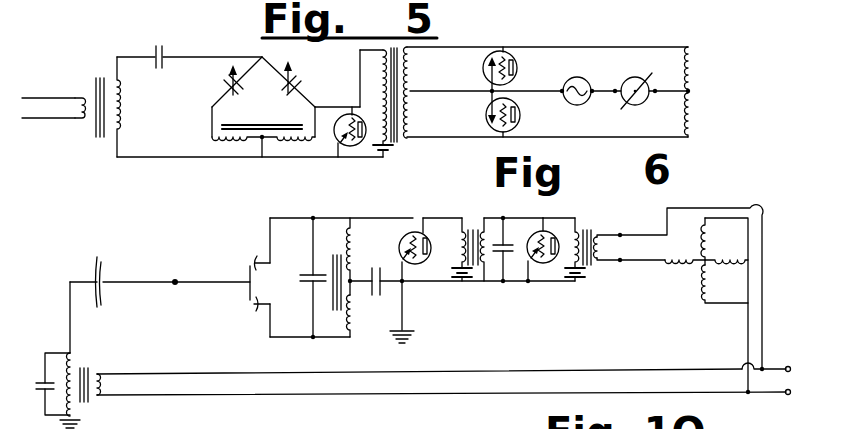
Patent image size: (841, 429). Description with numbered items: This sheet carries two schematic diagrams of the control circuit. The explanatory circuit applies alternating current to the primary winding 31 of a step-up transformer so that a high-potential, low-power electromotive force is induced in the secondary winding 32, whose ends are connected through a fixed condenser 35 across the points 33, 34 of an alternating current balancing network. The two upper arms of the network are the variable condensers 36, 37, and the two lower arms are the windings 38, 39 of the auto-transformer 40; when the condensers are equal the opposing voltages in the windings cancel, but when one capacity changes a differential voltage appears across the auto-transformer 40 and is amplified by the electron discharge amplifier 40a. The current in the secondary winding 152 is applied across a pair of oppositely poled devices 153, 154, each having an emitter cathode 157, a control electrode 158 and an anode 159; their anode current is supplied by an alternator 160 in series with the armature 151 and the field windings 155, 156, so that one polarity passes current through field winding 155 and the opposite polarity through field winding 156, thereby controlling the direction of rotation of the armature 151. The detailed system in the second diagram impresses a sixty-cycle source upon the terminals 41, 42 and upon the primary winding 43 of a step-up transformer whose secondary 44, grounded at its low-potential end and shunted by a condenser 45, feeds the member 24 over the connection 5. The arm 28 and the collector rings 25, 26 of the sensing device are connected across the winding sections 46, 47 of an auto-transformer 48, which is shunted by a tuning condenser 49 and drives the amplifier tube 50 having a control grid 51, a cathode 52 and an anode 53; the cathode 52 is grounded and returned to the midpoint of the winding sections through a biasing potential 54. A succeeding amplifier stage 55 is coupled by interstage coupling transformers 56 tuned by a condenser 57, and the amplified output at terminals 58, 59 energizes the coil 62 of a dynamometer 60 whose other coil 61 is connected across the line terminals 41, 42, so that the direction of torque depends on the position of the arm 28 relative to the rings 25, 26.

In FIG. 6, the conductor 5 is at (106, 287).
In FIG. 6, the member 24 is at (92, 276).
In FIG. 6, the collector ring 25 is at (258, 256).
In FIG. 6, the collector ring 26 is at (256, 306).
In FIG. 6, the arm 28 is at (248, 278).
In FIG. 5, the primary winding 31 is at (80, 111).
In FIG. 5, the secondary winding 32 is at (124, 108).
In FIG. 5, the point 33 is at (262, 57).
In FIG. 5, the point 34 is at (260, 148).
In FIG. 5, the condenser 35 is at (154, 52).
In FIG. 5, the variable condenser 36 is at (222, 88).
In FIG. 5, the variable condenser 37 is at (300, 80).
In FIG. 5, the winding 38 is at (228, 137).
In FIG. 5, the winding 39 is at (294, 138).
In FIG. 5, the auto-transformer 40 is at (249, 125).
In FIG. 5, the electron discharge amplifier 40a is at (352, 114).
In FIG. 6, the terminal 41 is at (798, 352).
In FIG. 6, the terminal 42 is at (790, 396).
In FIG. 6, the primary winding 43 is at (102, 387).
In FIG. 6, the transformer secondary 44 is at (76, 365).
In FIG. 6, the condenser 45 is at (38, 378).
In FIG. 6, the winding section 46 is at (348, 242).
In FIG. 6, the winding section 47 is at (346, 320).
In FIG. 6, the auto-transformer 48 is at (334, 292).
In FIG. 6, the condenser 49 is at (312, 272).
In FIG. 6, the amplifier tube 50 is at (410, 242).
In FIG. 6, the control grid 51 is at (413, 231).
In FIG. 6, the cathode 52 is at (402, 252).
In FIG. 6, the anode 53 is at (432, 254).
In FIG. 6, the biasing potential 54 is at (380, 294).
In FIG. 6, the amplifier stage 55 is at (538, 238).
In FIG. 6, the interstage coupling transformer 56 is at (478, 270).
In FIG. 6, the condenser 57 is at (506, 266).
In FIG. 6, the terminal 58 is at (634, 222).
In FIG. 6, the terminal 59 is at (620, 261).
In FIG. 6, the dynamometer 60 is at (695, 268).
In FIG. 6, the coil 61 is at (710, 283).
In FIG. 6, the coil 62 is at (713, 258).
In FIG. 5, the armature 151 is at (635, 105).
In FIG. 5, the secondary winding 152 is at (400, 141).
In FIG. 5, the device 153 is at (489, 78).
In FIG. 5, the device 154 is at (490, 124).
In FIG. 5, the field winding 155 is at (692, 71).
In FIG. 5, the field winding 156 is at (692, 112).
In FIG. 5, the emitter cathode 157 is at (491, 68).
In FIG. 5, the control electrode 158 is at (507, 54).
In FIG. 5, the anode 159 is at (514, 66).
In FIG. 5, the alternator 160 is at (581, 105).